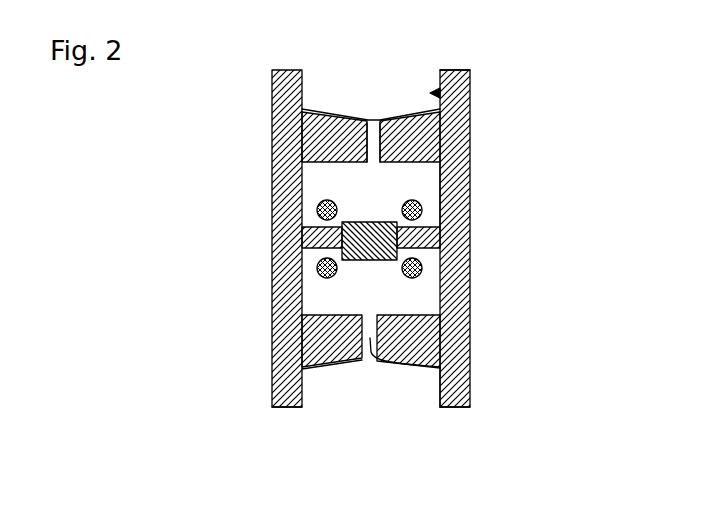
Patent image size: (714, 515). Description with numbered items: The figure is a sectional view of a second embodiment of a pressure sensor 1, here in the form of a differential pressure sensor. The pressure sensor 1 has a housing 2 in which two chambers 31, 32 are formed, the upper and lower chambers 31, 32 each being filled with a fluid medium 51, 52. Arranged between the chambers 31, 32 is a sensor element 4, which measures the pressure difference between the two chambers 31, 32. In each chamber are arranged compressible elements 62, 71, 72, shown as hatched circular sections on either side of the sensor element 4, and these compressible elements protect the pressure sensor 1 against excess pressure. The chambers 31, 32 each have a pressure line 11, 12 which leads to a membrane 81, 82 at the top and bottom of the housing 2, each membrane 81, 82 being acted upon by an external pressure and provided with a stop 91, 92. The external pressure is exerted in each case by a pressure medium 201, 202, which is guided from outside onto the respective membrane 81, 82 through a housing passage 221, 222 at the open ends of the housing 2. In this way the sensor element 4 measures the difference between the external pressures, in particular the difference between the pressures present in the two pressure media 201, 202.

The pressure sensor 1 is at (254, 240).
The housing 2 is at (470, 170).
The sensor element 4 is at (470, 254).
The pressure line 11 is at (470, 139).
The pressure line 12 is at (383, 362).
The chamber 31 is at (320, 180).
The chamber 32 is at (318, 300).
The fluid medium 51 is at (433, 192).
The fluid medium 52 is at (443, 240).
The compressible element 62 is at (318, 208).
The compressible element 71 is at (422, 210).
The compressible element 72 is at (420, 274).
The membrane 81 is at (404, 112).
The membrane 82 is at (367, 362).
The stop 91 is at (338, 118).
The stop 92 is at (333, 362).
The pressure medium 201 is at (433, 77).
The pressure medium 202 is at (422, 394).
The housing passage 221 is at (470, 104).
The housing passage 222 is at (307, 391).